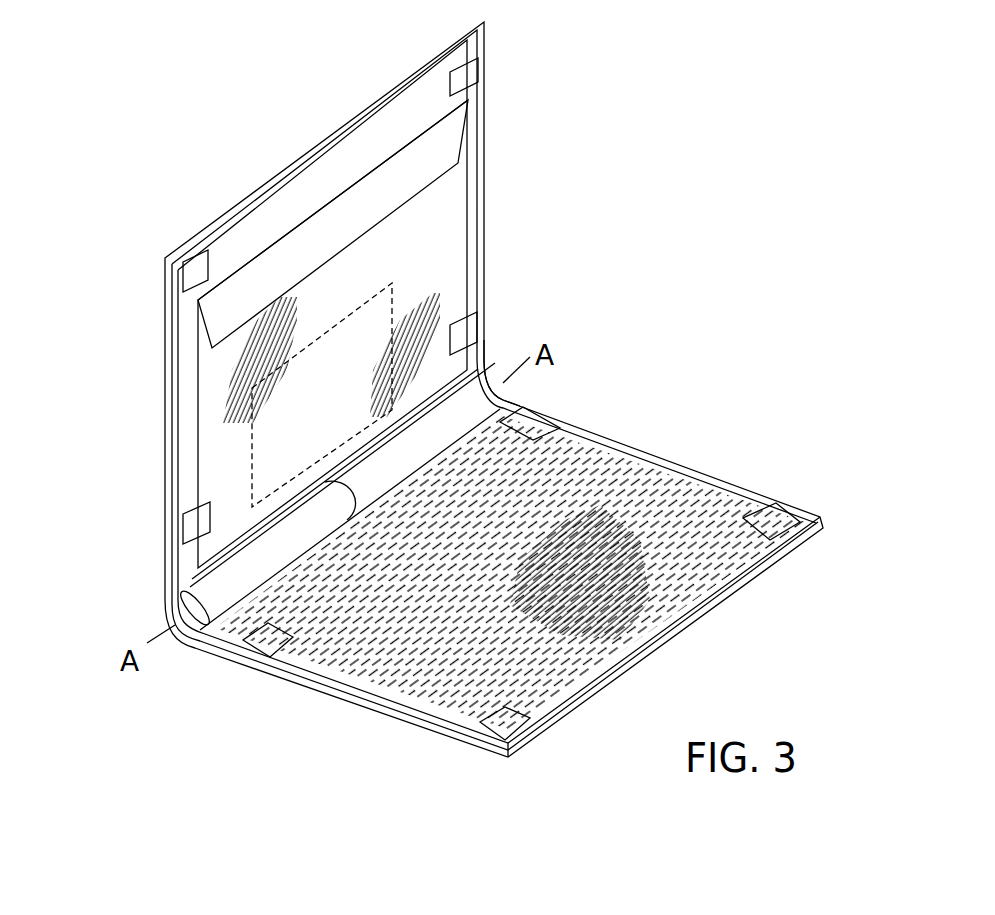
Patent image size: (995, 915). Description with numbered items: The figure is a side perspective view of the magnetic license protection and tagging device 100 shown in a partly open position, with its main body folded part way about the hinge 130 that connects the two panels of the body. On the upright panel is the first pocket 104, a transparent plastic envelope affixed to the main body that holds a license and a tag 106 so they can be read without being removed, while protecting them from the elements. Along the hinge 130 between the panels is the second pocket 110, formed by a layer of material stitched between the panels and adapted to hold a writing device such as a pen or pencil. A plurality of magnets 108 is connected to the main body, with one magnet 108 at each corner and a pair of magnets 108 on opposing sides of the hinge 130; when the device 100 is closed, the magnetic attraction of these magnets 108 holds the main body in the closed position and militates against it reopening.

The magnetic license protection and tagging device 100 is at (203, 132).
The first pocket 104 is at (436, 231).
The license and tag 106 is at (252, 437).
The magnet 108 is at (468, 63).
The second pocket 110 is at (274, 582).
The hinge 130 is at (516, 394).